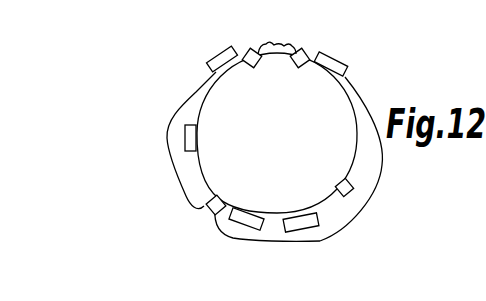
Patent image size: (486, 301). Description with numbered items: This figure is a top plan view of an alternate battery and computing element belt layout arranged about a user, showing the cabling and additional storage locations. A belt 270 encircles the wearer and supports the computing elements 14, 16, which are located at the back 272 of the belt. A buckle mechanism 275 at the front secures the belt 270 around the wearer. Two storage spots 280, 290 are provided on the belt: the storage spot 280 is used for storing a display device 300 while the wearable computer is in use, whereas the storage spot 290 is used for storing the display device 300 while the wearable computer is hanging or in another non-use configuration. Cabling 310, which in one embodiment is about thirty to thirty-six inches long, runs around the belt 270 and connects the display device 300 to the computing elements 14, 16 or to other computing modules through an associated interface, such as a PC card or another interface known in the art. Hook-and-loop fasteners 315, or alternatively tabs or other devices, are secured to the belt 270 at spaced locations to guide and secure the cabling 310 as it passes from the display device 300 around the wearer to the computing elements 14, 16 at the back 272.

The computing element 14 is at (244, 234).
The computing element 16 is at (303, 226).
The belt 270 is at (177, 202).
The back 272 is at (270, 198).
The buckle mechanism 275 is at (267, 38).
The storage spot 280 is at (214, 53).
The storage spot 290 is at (320, 78).
The display device 300 is at (348, 58).
The cabling 310 is at (383, 174).
The hook-and-loop fasteners 315 is at (197, 136).